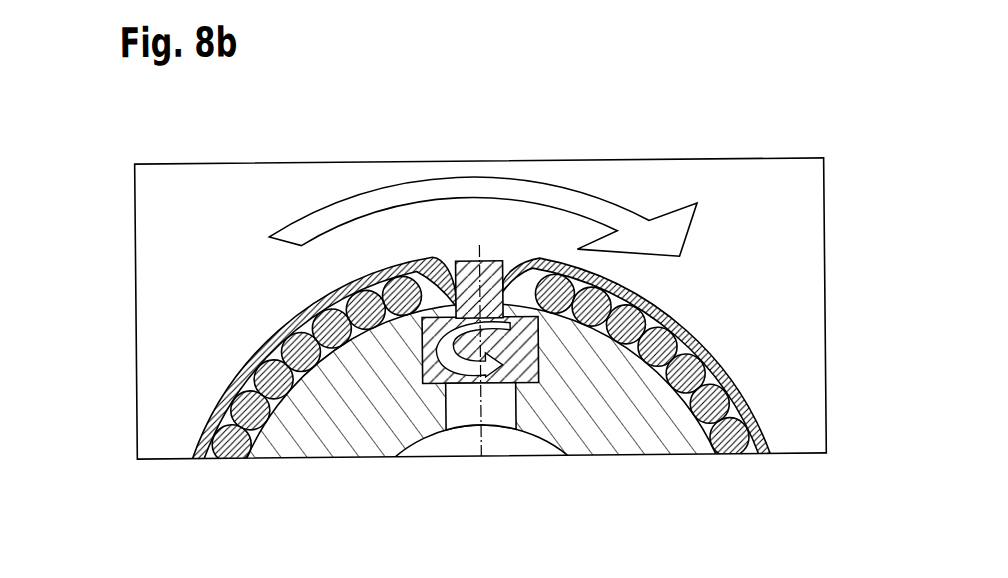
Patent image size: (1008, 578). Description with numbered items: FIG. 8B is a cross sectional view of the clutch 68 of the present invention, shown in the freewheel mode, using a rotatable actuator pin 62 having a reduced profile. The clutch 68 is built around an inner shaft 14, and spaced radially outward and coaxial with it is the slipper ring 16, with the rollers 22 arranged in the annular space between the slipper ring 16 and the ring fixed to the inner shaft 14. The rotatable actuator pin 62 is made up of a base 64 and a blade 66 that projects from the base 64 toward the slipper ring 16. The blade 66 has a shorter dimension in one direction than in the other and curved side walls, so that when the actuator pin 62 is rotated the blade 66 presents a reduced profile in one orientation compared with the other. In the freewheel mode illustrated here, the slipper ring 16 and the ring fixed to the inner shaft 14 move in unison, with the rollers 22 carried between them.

The clutch 68 is at (129, 332).
The slipper ring 16 is at (480, 363).
The rollers 22 is at (480, 367).
The inner shaft 14 is at (309, 443).
The base 64 is at (540, 376).
The blade 66 is at (468, 261).
The rotatable actuator pin 62 is at (452, 252).